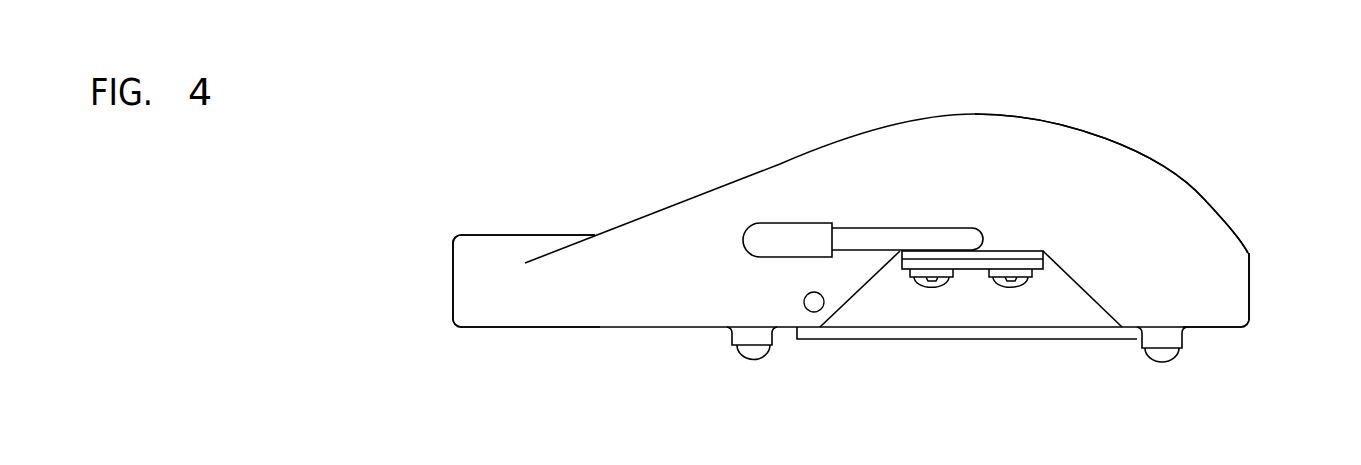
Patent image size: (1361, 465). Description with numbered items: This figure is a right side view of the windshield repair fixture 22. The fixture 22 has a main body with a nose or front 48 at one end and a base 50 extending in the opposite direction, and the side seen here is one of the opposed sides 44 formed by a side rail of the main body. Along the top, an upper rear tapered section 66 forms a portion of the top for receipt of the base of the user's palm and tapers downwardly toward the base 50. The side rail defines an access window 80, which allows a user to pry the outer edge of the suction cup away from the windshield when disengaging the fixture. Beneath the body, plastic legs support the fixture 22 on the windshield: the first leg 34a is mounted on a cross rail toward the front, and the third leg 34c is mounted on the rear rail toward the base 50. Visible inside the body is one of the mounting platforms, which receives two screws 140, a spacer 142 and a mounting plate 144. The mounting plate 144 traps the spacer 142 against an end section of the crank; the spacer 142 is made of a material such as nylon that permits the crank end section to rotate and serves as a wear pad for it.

The fixture 22 is at (676, 148).
The opposed side 44 is at (922, 192).
The nose or front 48 is at (455, 323).
The base 50 is at (1249, 327).
The upper rear tapered section 66 is at (1203, 200).
The access window 80 is at (1093, 300).
The screws 140 is at (923, 286).
The spacer 142 is at (1012, 250).
The mounting plate 144 is at (970, 270).
The first leg 34a is at (740, 358).
The third leg 34c is at (1170, 361).